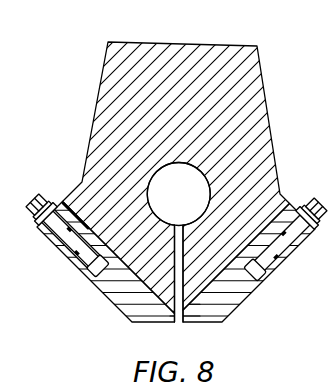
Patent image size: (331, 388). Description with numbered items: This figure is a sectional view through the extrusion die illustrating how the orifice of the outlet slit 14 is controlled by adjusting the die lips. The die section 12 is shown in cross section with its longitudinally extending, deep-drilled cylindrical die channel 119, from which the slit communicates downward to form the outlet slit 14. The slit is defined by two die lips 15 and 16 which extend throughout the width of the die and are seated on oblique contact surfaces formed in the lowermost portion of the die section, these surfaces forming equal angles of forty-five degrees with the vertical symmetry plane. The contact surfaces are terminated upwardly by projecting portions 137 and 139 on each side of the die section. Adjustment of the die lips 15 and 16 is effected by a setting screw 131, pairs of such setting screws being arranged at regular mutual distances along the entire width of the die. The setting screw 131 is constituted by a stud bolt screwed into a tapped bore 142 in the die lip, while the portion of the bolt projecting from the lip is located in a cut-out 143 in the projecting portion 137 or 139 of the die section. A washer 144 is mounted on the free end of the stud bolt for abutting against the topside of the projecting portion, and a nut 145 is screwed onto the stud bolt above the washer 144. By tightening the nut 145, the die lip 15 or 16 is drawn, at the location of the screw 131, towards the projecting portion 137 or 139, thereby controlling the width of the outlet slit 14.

The die section 12 is at (260, 46).
The outlet slit 14 is at (178, 323).
The die lip 15 is at (123, 313).
The die lip 16 is at (232, 308).
The die channel 119 is at (203, 180).
The setting screw 131 is at (43, 192).
The projecting portion 137 is at (59, 246).
The projecting portion 139 is at (316, 238).
The tapped bore 142 is at (94, 270).
The cut-out 143 is at (62, 250).
The washer 144 is at (38, 217).
The nut 145 is at (54, 197).